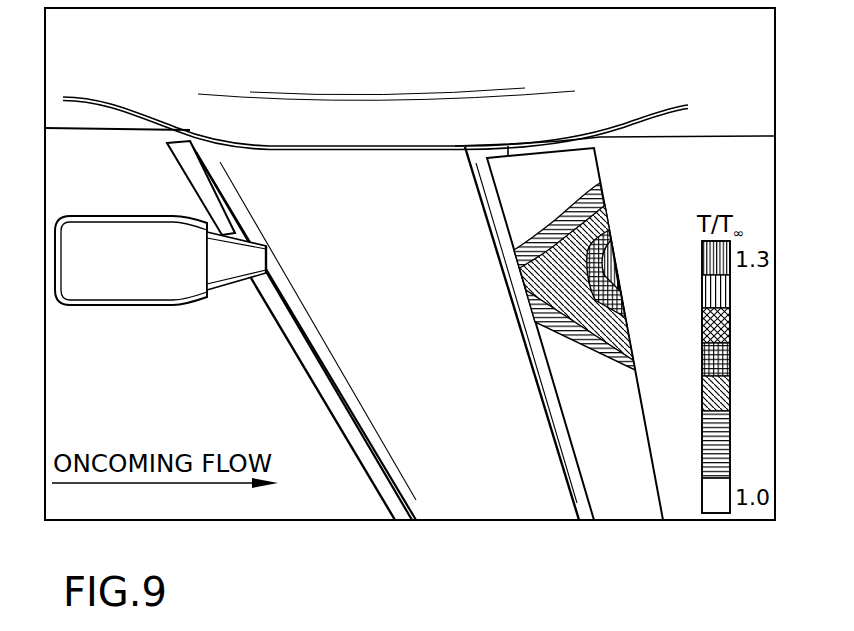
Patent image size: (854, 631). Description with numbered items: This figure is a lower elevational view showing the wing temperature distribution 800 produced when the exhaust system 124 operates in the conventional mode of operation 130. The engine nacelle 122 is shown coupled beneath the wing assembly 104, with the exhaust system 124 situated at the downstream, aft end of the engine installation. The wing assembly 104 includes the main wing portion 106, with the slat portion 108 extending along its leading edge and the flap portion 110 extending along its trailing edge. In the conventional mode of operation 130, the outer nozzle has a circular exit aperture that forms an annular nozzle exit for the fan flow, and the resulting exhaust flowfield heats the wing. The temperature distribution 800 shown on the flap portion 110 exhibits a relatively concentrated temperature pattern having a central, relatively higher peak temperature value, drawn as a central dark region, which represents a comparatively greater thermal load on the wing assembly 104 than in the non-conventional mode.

The wing assembly 104 is at (422, 532).
The main wing portion 106 is at (477, 485).
The slat portion 108 is at (348, 438).
The flap portion 110 is at (617, 500).
The engine nacelle 122 is at (140, 290).
The exhaust system 124 is at (238, 310).
The conventional mode of operation 130 is at (180, 198).
The wing temperature distribution 800 is at (628, 242).